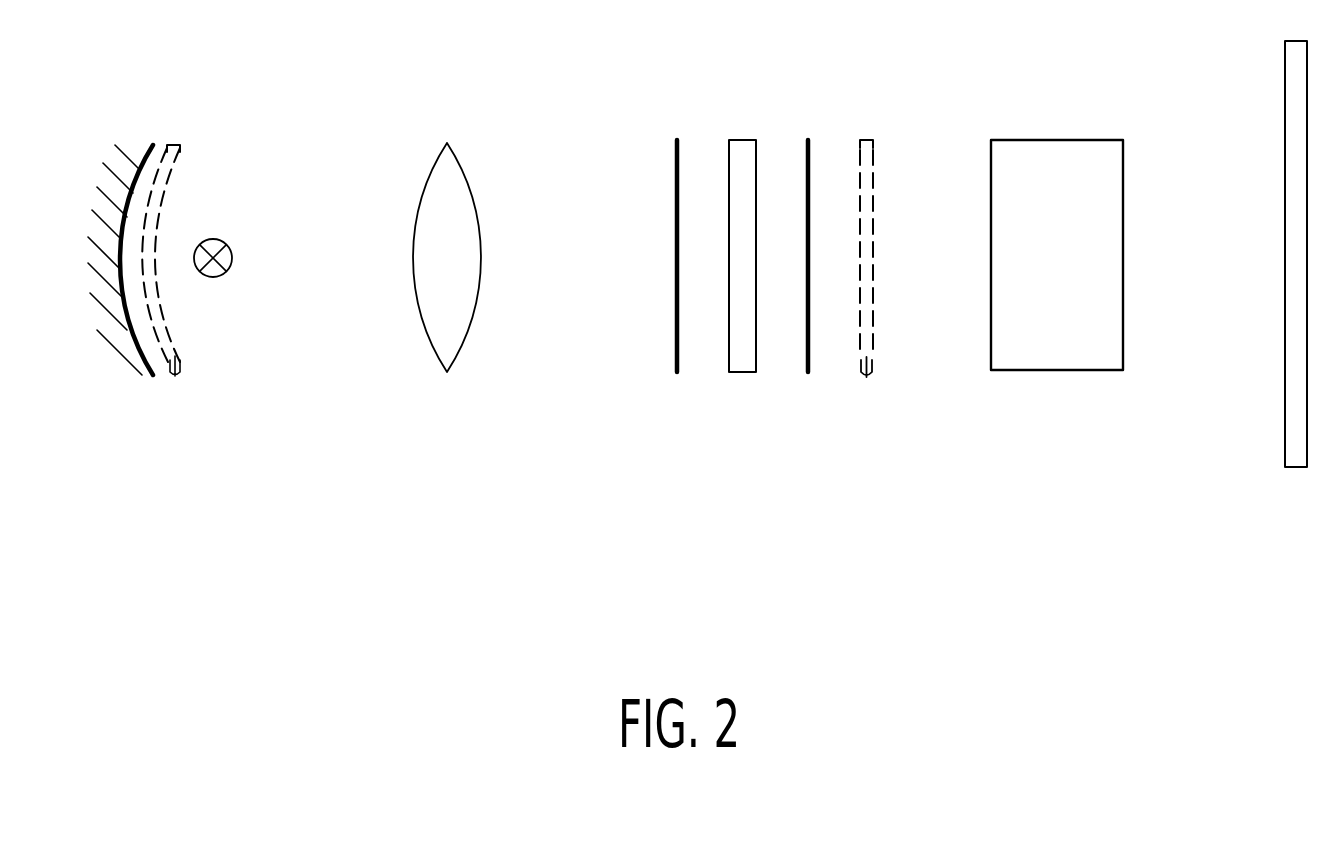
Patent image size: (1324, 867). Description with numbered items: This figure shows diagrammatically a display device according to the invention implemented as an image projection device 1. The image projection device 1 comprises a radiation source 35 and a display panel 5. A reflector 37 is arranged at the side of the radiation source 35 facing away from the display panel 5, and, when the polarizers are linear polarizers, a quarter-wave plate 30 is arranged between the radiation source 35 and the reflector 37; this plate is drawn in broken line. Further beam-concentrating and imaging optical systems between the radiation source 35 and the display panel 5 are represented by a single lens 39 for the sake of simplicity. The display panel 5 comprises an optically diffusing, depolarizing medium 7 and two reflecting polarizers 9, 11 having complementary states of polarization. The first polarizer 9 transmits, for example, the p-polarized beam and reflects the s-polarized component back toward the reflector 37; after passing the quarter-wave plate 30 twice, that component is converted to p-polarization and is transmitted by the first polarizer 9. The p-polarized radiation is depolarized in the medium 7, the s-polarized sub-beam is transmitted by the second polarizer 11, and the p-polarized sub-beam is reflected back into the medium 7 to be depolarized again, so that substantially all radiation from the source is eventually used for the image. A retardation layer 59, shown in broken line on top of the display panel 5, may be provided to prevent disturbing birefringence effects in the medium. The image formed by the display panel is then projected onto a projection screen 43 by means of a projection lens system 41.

The image projection device 1 is at (128, 565).
The display panel 5 is at (718, 483).
The optically diffusing, depolarizing medium 7 is at (743, 358).
The first reflecting polarizer 9 is at (677, 372).
The second reflecting polarizer 11 is at (808, 372).
The λ/4 plate 30 is at (178, 382).
The radiation source 35 is at (213, 277).
The reflector 37 is at (152, 377).
The lens 39 is at (447, 372).
The projection lens system 41 is at (1050, 357).
The projection screen 43 is at (1293, 455).
The retardation layer 59 is at (869, 382).